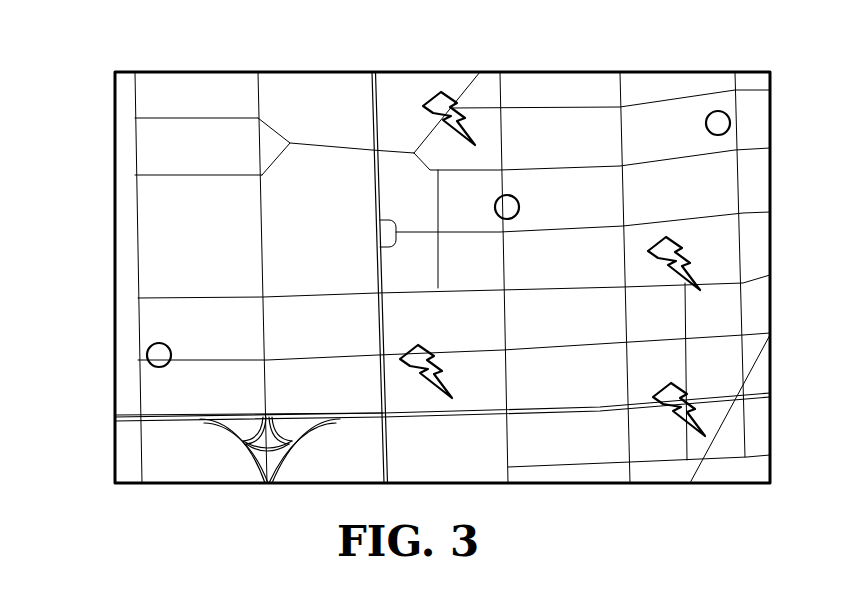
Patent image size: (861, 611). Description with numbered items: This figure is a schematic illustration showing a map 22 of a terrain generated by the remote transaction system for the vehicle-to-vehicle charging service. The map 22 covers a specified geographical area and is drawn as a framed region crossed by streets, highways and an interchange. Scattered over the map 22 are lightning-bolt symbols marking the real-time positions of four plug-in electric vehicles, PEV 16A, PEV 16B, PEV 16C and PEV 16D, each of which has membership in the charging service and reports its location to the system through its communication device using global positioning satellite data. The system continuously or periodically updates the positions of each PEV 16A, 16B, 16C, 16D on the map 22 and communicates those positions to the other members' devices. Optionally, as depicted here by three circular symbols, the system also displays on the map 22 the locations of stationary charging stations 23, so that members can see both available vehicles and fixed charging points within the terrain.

The map 22 is at (87, 87).
The PEV 16A is at (658, 265).
The PEV 16B is at (663, 413).
The PEV 16C is at (446, 92).
The PEV 16D is at (445, 357).
The stationary charging station 23 is at (515, 197).